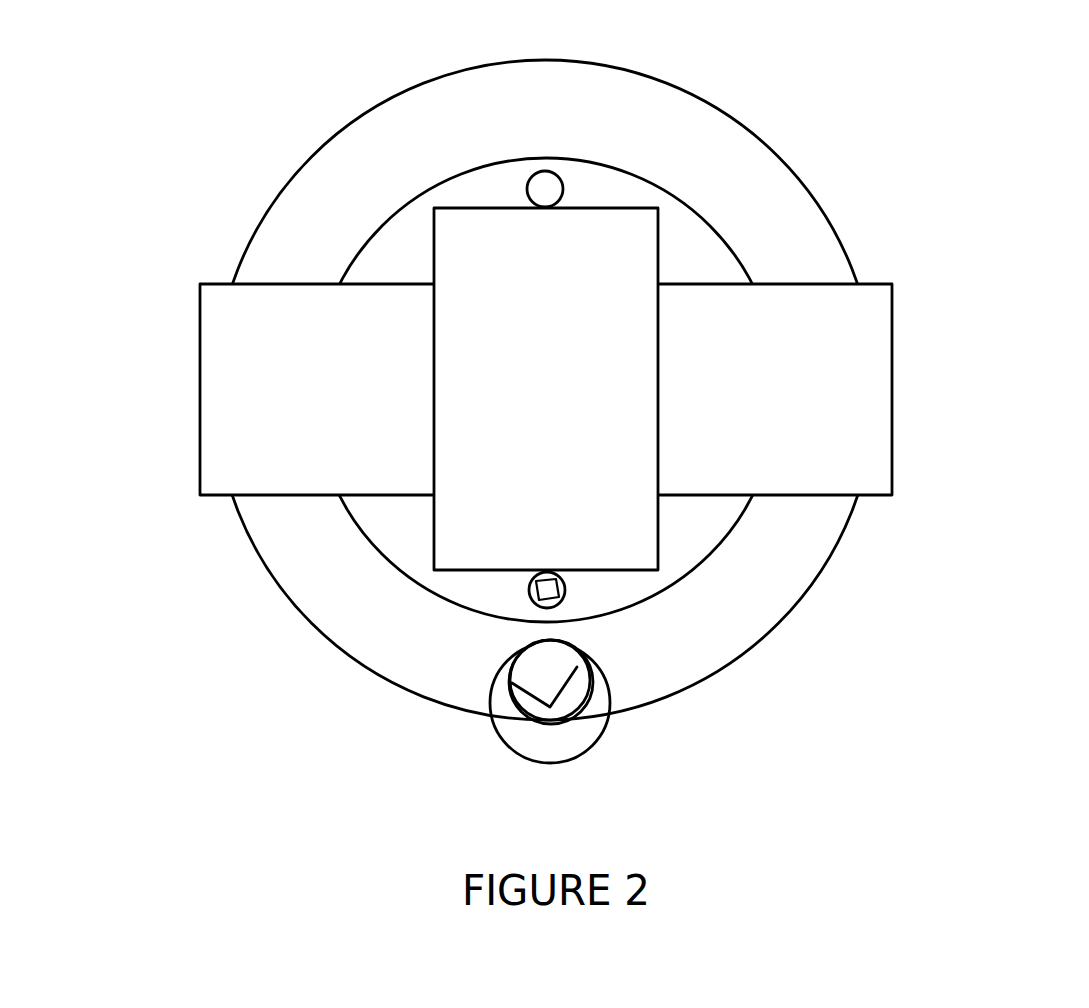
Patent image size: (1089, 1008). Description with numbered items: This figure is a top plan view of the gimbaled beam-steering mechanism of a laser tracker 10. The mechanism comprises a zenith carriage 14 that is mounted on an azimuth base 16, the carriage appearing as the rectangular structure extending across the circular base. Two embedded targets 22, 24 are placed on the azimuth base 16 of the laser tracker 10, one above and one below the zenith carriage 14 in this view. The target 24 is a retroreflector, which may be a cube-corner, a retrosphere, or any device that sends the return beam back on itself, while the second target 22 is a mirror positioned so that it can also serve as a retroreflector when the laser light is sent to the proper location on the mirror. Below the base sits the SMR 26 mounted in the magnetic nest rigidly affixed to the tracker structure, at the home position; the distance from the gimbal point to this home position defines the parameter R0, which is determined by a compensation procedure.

The laser tracker 10 is at (278, 90).
The zenith carriage 14 is at (892, 387).
The azimuth base 16 is at (843, 238).
The embedded target (mirror) 22 is at (548, 193).
The embedded target (retroreflector) 24 is at (565, 593).
The SMR 26 is at (603, 685).